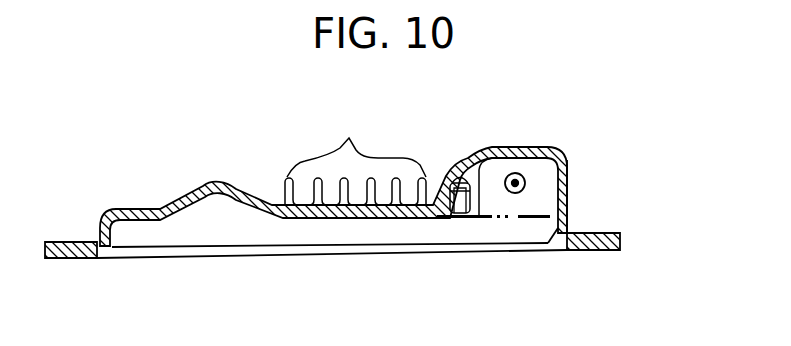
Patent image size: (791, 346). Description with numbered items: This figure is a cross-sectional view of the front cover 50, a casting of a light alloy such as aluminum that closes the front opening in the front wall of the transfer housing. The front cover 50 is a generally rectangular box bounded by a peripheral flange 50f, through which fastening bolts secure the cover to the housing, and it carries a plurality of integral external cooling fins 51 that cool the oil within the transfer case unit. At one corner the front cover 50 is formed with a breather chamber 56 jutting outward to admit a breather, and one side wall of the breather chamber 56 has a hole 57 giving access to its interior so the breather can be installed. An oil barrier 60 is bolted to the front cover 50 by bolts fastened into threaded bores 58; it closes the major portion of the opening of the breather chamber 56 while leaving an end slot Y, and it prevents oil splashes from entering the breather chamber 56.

The front cover 50 is at (203, 188).
The peripheral flange 50f is at (621, 242).
The external cooling fins 51 is at (350, 140).
The breather chamber 56 is at (542, 171).
The hole 57 is at (517, 173).
The threaded bores 58 is at (455, 178).
The oil barrier 60 is at (480, 220).
The end slot Y is at (543, 223).